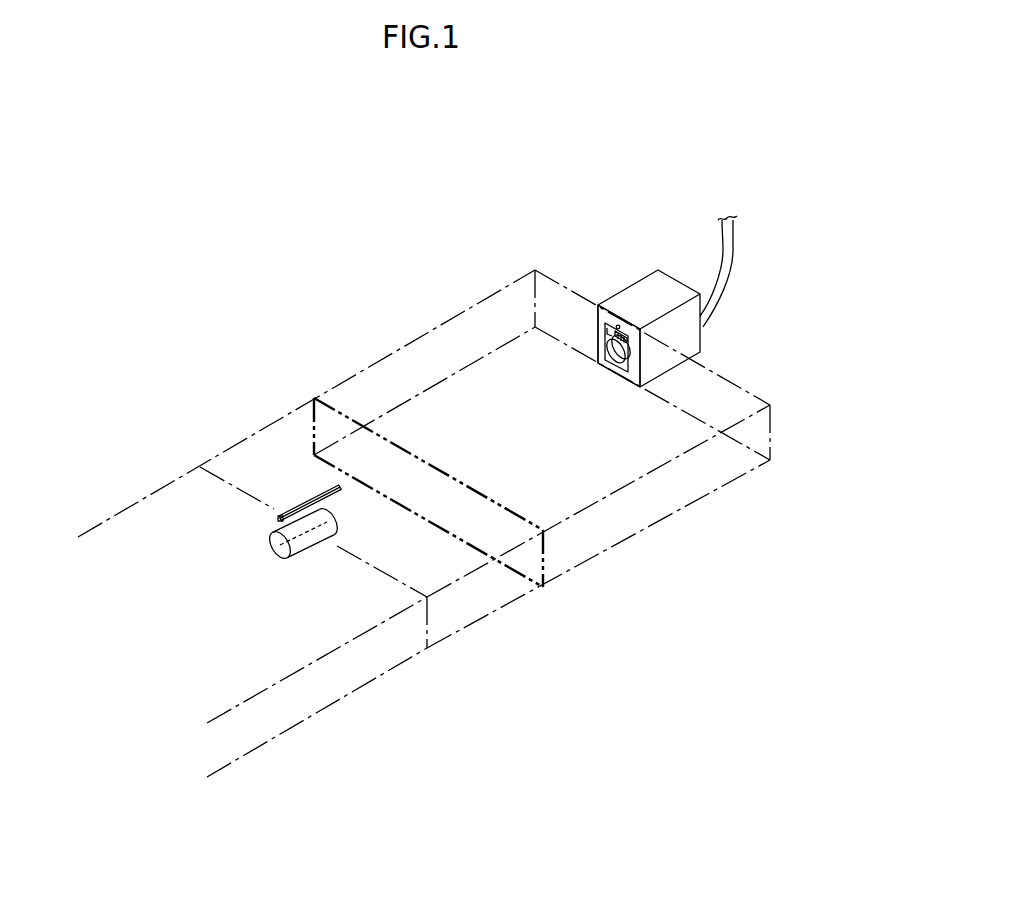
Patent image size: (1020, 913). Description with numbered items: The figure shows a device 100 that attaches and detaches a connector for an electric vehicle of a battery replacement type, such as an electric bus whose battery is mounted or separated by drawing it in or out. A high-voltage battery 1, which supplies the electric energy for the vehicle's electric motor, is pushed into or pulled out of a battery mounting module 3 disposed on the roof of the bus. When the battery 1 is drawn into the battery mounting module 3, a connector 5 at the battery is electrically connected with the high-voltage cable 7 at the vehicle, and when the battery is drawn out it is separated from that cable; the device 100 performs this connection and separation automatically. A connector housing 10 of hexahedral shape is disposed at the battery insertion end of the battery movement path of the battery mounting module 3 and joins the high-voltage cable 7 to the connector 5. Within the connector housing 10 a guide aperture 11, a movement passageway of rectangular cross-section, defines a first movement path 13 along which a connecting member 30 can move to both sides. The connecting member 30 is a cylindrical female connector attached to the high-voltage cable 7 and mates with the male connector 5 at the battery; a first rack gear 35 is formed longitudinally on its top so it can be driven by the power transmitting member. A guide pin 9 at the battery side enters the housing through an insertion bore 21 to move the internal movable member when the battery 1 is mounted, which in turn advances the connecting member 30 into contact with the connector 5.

The device that attaches and detaches a connector 100 is at (428, 178).
The high-voltage battery 1 is at (157, 490).
The battery mounting module 3 is at (443, 322).
The connector at the battery 5 is at (327, 527).
The guide pin 9 is at (310, 503).
The connector housing 10 is at (641, 280).
The guide aperture 11 is at (605, 334).
The first movement path 13 is at (612, 326).
The insertion bore 21 is at (640, 333).
The high-voltage cable 7 is at (725, 268).
The connecting member 30 is at (623, 368).
The first rack gear 35 is at (622, 327).